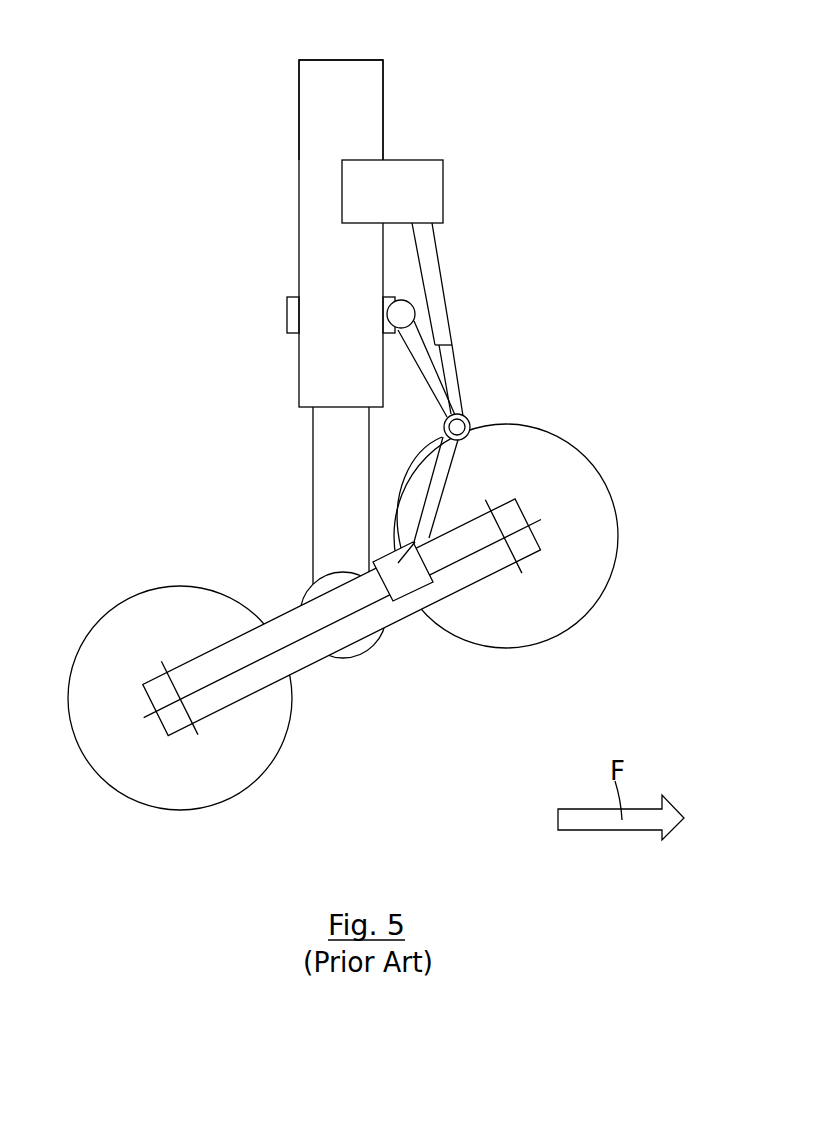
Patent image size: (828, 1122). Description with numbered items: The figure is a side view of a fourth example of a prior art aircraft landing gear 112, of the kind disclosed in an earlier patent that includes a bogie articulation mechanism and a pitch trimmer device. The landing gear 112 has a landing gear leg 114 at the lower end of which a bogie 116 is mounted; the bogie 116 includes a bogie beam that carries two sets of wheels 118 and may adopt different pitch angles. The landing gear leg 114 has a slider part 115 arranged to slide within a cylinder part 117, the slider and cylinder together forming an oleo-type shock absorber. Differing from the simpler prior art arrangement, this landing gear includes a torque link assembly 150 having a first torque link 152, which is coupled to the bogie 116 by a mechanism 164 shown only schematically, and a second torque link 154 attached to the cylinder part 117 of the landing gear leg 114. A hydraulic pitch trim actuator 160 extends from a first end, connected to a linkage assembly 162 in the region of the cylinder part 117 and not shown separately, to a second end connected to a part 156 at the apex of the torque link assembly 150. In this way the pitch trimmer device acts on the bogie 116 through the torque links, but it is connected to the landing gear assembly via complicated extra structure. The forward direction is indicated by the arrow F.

The landing gear 112 is at (121, 352).
The landing gear leg 114 is at (312, 369).
The slider part 115 is at (322, 429).
The bogie 116 is at (398, 613).
The cylinder part 117 is at (311, 223).
The wheels 118 is at (250, 780).
The torque link assembly 150 is at (412, 300).
The first torque link 152 is at (420, 530).
The second torque link 154 is at (430, 367).
The part at the apex of the torque link assembly 156 is at (473, 427).
The hydraulic pitch trim actuator 160 is at (440, 269).
The linkage assembly 162 is at (422, 183).
The mechanism 164 is at (447, 460).